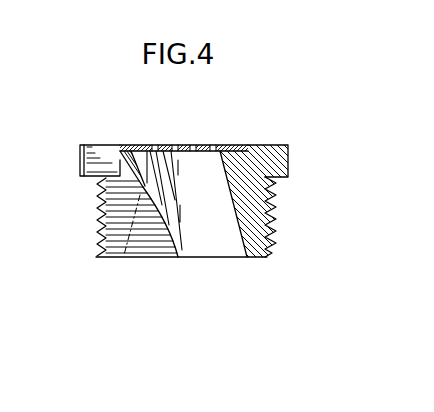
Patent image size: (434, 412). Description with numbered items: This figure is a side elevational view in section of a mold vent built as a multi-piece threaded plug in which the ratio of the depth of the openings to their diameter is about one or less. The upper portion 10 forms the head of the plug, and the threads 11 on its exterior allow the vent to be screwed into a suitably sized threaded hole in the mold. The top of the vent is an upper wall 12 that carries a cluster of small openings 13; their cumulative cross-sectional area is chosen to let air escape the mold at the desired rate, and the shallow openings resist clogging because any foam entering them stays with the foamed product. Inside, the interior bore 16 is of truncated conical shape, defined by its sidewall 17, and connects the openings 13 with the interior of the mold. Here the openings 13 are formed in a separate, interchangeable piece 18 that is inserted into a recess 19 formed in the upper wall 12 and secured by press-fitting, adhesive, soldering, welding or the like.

The upper portion 10 is at (80, 156).
The threads 11 is at (100, 210).
The upper wall 12 is at (102, 145).
The openings 13 is at (213, 145).
The interior bore 16 is at (190, 238).
The sidewall 17 is at (238, 242).
The piece 18 is at (230, 145).
The recess 19 is at (127, 145).